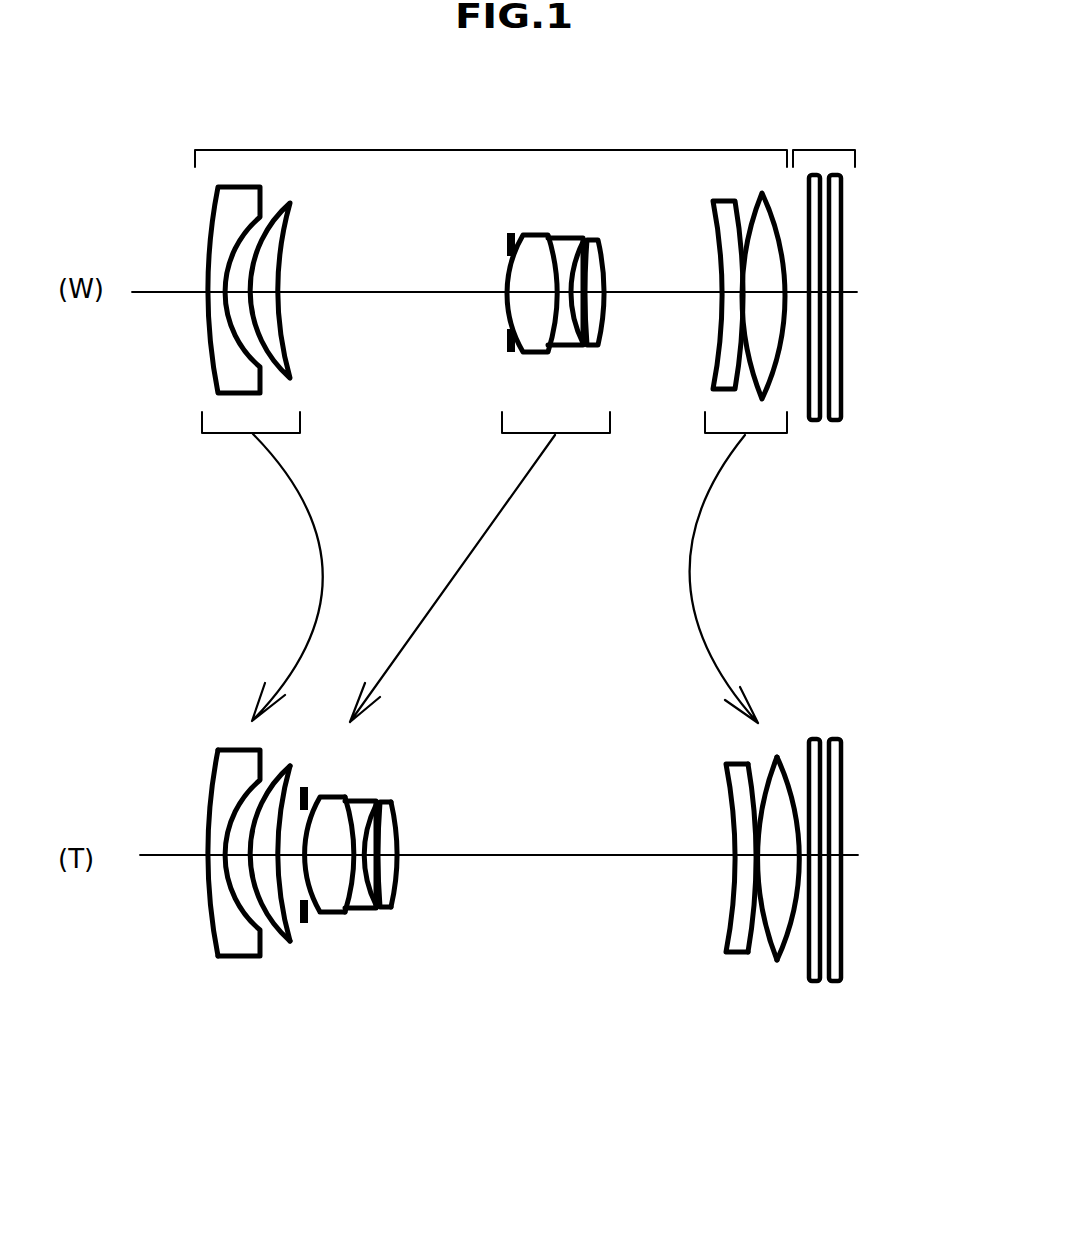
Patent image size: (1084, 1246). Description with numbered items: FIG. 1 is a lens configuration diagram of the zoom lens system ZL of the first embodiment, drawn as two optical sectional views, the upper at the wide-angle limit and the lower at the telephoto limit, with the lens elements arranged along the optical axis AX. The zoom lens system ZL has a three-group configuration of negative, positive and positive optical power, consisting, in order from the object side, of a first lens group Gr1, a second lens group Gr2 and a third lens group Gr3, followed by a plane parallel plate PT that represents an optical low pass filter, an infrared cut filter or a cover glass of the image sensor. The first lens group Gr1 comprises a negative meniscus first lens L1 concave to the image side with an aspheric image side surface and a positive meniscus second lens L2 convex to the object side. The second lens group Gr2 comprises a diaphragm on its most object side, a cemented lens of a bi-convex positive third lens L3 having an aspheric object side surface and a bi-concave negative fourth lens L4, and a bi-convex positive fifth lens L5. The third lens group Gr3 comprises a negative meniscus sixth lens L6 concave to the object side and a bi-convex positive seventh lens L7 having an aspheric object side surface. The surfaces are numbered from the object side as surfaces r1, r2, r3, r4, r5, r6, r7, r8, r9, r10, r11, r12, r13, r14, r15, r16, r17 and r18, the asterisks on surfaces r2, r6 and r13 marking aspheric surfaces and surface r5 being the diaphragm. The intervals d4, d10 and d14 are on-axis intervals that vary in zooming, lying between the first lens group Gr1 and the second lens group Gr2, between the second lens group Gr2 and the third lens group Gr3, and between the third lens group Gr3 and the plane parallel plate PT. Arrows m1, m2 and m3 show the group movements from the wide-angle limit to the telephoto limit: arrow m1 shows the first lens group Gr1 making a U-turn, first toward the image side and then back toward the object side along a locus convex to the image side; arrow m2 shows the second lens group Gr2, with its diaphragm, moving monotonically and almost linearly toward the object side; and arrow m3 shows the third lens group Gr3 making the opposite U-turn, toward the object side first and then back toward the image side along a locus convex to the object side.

The zoom lens system ZL is at (491, 143).
The plane parallel plate PT is at (824, 269).
The optical axis AX is at (520, 567).
The first lens group Gr1 is at (254, 332).
The second lens group Gr2 is at (528, 357).
The third lens group Gr3 is at (709, 327).
The first lens L1 is at (209, 230).
The second lens L2 is at (287, 240).
The third lens L3 is at (537, 352).
The fourth lens L4 is at (560, 345).
The fifth lens L5 is at (592, 345).
The sixth lens L6 is at (714, 230).
The seventh lens L7 is at (755, 203).
The fourth on-the-axis interval d4 is at (390, 277).
The tenth on-the-axis interval d10 is at (670, 277).
The fourteenth on-the-axis interval d14 is at (798, 292).
The arrow indicating movement of first lens group m1 is at (321, 593).
The arrow indicating movement of second lens group m2 is at (435, 603).
The arrow indicating movement of third lens group m3 is at (691, 595).
The first surface r1 is at (201, 863).
The second surface r2 is at (229, 883).
The third surface r3 is at (270, 925).
The fourth surface r4 is at (288, 940).
The fifth surface r5 is at (302, 923).
The sixth surface r6 is at (312, 906).
The seventh surface r7 is at (340, 912).
The eighth surface r8 is at (363, 906).
The ninth surface r9 is at (382, 882).
The tenth surface r10 is at (398, 870).
The eleventh surface r11 is at (728, 912).
The twelfth surface r12 is at (750, 923).
The thirteenth surface r13 is at (762, 942).
The fourteenth surface r14 is at (810, 1010).
The fifteenth surface r15 is at (810, 773).
The sixteenth surface r16 is at (820, 803).
The seventeenth surface r17 is at (827, 831).
The eighteenth surface r18 is at (842, 873).